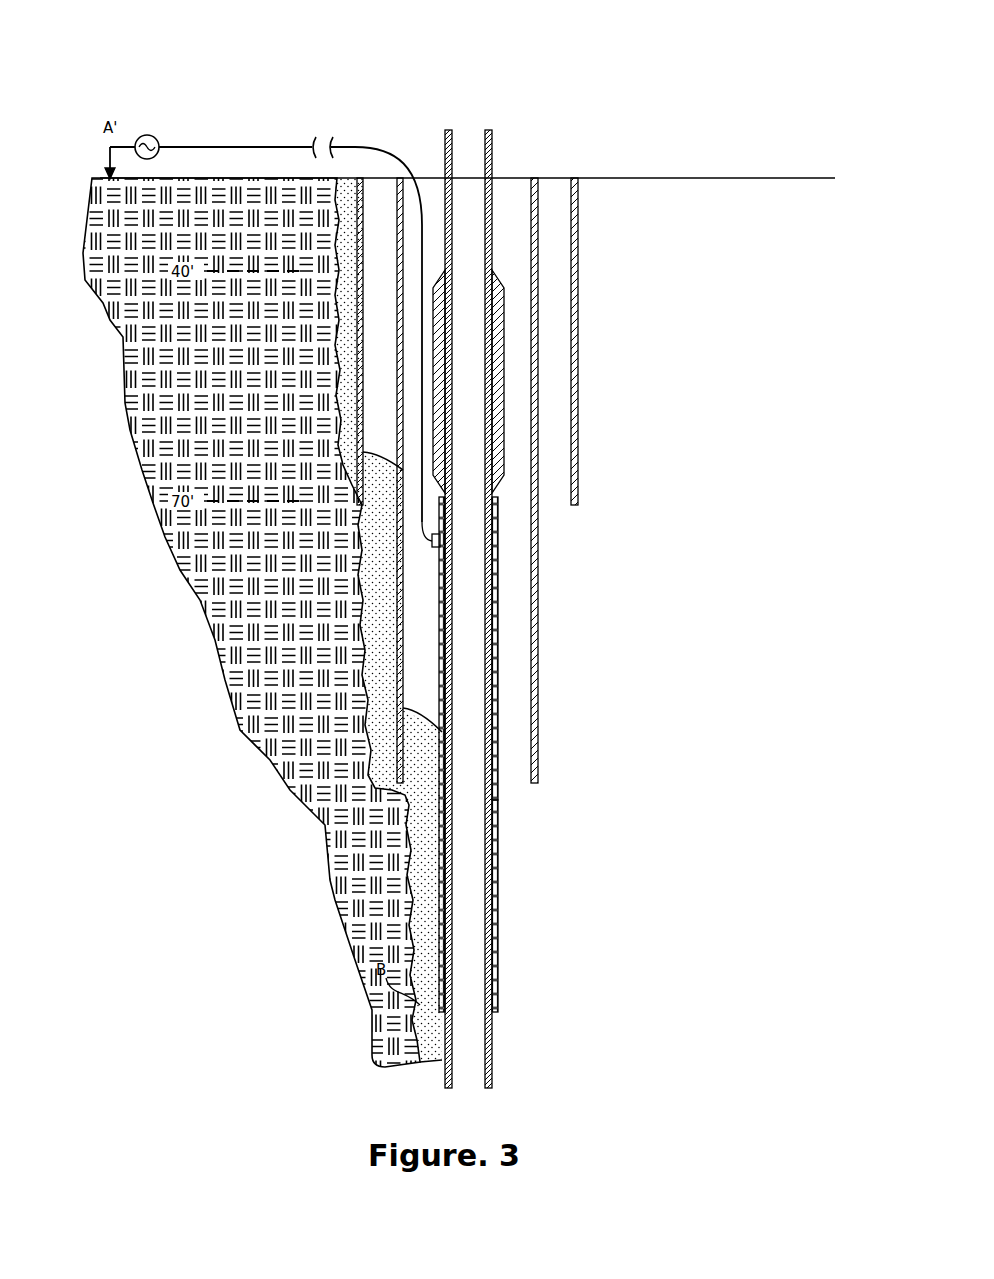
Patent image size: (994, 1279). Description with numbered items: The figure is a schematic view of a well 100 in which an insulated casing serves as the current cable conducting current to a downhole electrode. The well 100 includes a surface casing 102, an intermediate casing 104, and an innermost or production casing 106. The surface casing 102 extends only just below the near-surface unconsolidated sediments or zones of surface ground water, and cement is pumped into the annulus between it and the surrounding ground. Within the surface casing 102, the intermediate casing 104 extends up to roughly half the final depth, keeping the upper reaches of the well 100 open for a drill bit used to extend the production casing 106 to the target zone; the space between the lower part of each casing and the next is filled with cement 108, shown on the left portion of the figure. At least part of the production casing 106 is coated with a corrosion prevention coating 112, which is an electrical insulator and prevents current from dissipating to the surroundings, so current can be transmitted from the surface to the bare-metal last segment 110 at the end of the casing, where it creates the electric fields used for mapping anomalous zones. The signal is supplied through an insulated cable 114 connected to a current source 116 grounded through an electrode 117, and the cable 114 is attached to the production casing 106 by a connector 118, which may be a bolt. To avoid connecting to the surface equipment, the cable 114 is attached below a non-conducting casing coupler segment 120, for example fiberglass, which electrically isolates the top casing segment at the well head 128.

The well 100 is at (568, 86).
The surface casing 102 is at (579, 220).
The intermediate casing 104 is at (538, 490).
The production casing 106 is at (498, 706).
The cement 108 is at (368, 664).
The last segment 110 is at (492, 1057).
The corrosion prevention coating 112 is at (498, 880).
The insulated cable 114 is at (232, 147).
The current source 116 is at (157, 139).
The electrode 117 is at (108, 170).
The connector 118 is at (432, 546).
The casing coupler segment 120 is at (504, 350).
The well head 128 is at (491, 148).